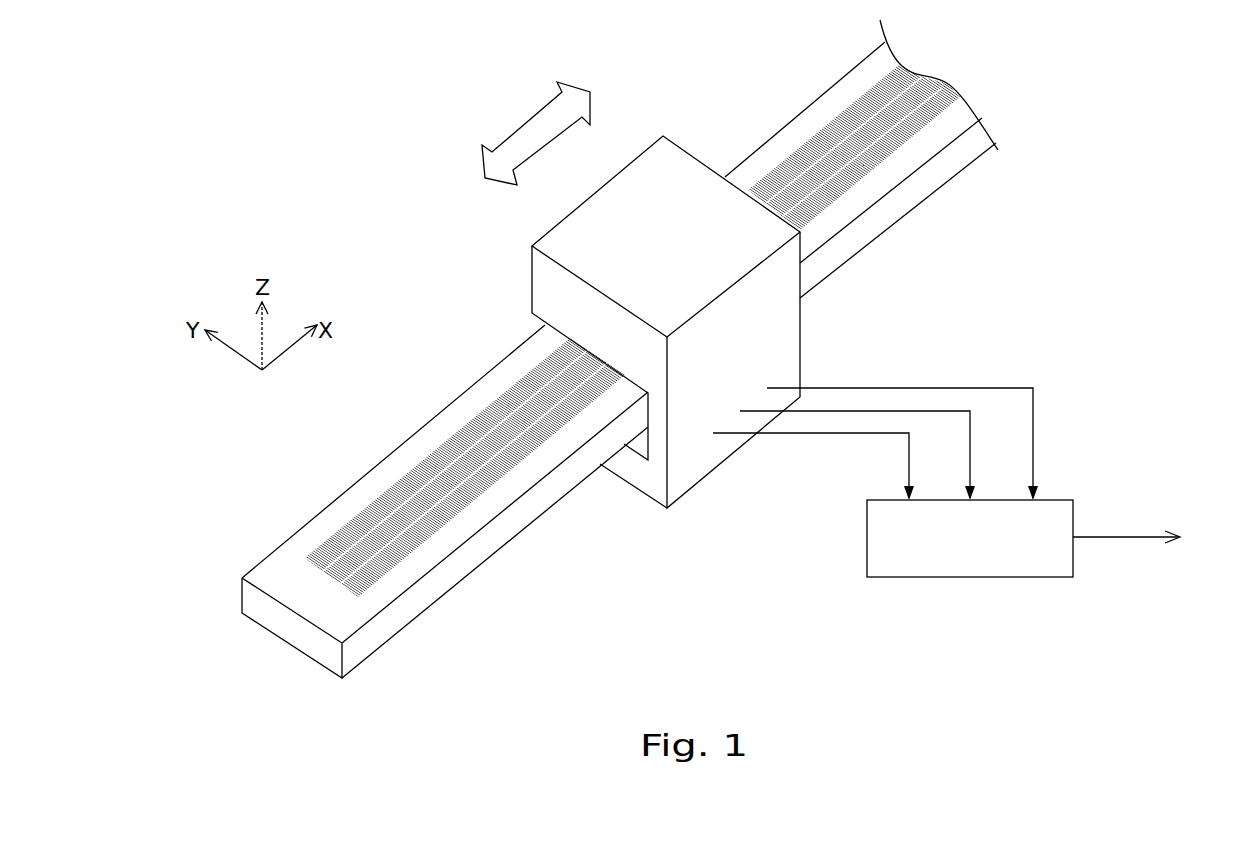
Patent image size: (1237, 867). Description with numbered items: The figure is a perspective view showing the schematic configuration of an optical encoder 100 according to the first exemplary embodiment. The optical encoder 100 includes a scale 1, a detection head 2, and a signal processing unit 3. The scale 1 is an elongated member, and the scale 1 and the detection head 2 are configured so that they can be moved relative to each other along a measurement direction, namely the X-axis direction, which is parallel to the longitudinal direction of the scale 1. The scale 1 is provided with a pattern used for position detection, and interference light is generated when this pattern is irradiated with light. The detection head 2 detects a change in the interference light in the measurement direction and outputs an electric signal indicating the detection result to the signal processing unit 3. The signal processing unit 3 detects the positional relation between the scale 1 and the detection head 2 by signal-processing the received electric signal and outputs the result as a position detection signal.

The optical encoder 100 is at (331, 125).
The scale 1 is at (280, 566).
The detection head 2 is at (685, 168).
The signal processing unit 3 is at (968, 578).